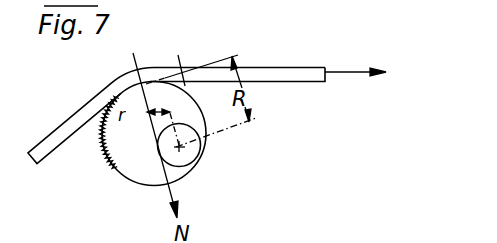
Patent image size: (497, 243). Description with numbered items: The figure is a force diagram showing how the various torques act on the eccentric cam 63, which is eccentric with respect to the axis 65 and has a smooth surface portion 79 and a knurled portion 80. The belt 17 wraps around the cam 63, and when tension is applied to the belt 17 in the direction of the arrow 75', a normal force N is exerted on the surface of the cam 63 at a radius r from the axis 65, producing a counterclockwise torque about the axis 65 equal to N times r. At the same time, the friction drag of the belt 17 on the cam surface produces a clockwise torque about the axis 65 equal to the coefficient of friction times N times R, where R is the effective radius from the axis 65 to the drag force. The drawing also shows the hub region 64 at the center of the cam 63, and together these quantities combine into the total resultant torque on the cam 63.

The belt 17 is at (288, 67).
The cam 63 is at (140, 176).
The roller hub 64 is at (192, 153).
The axis 65 is at (194, 121).
The smooth surface portion 79 is at (169, 60).
The knurled portion 80 is at (106, 155).
The arrow 75' is at (355, 53).